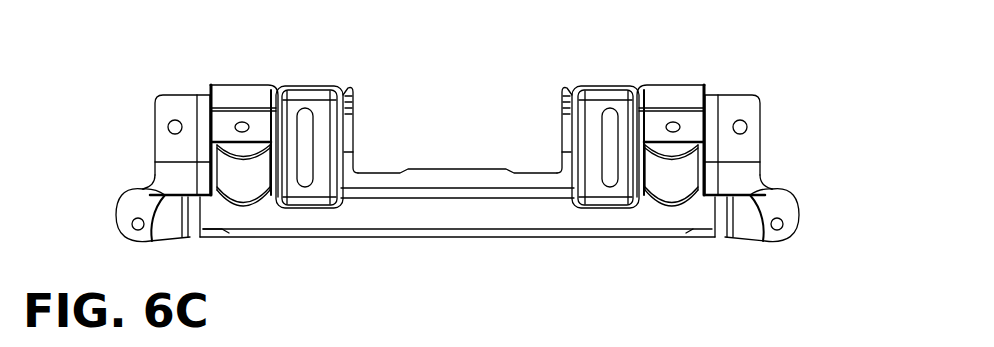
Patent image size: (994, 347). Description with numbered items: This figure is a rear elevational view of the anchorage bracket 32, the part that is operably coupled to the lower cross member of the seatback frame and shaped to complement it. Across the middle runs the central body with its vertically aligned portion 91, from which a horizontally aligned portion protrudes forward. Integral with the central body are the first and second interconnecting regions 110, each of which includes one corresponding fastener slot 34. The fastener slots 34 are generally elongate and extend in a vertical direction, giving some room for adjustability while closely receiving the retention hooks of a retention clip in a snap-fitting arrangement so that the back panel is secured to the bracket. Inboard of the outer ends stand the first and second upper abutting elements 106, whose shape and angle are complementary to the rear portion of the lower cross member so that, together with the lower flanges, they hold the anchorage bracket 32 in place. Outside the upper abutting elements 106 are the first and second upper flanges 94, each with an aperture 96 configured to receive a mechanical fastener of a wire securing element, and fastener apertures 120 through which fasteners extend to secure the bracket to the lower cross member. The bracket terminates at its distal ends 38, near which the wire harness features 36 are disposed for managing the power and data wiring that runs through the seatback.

The anchorage bracket 32 is at (448, 238).
The fastener slots 34 is at (315, 135).
The wire harness features 36 is at (451, 176).
The distal ends 38 is at (128, 226).
The vertically aligned portion 91 is at (310, 218).
The first and second upper flanges 94 is at (187, 107).
The apertures 96 is at (167, 127).
The first and second upper abutting elements 106 is at (253, 118).
The first and second interconnecting regions 110 is at (318, 98).
The fastener apertures 120 is at (235, 118).